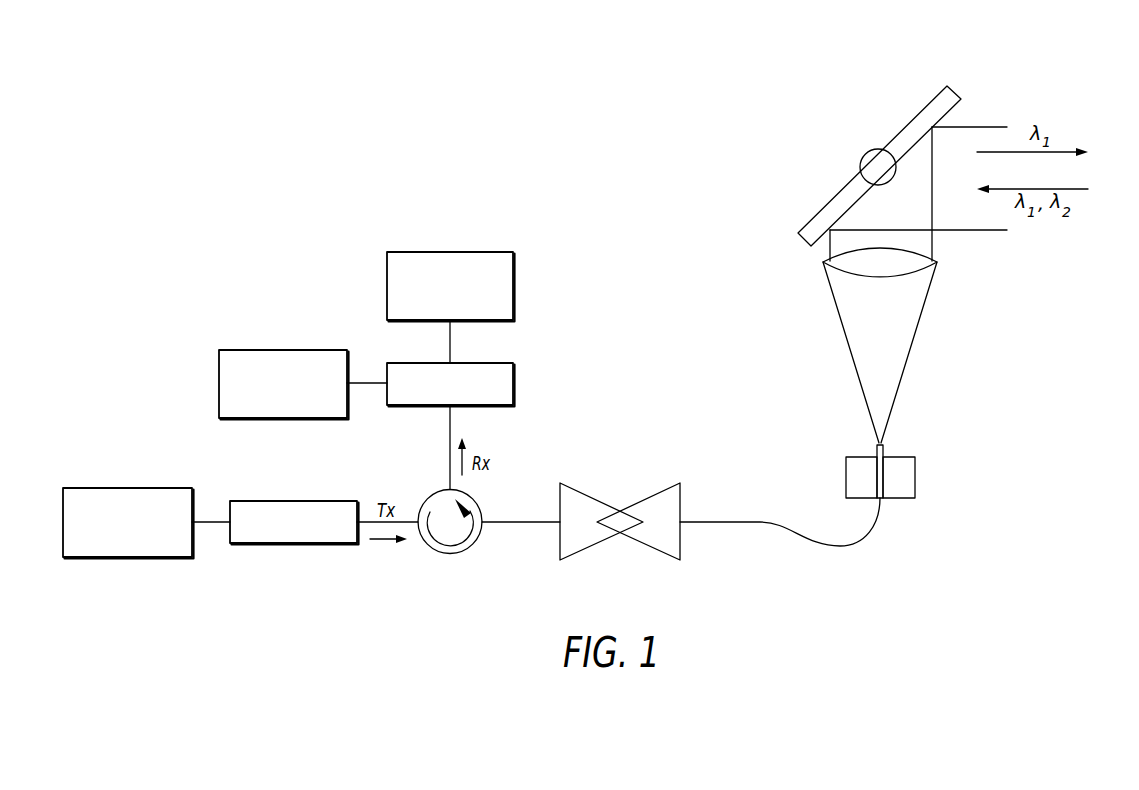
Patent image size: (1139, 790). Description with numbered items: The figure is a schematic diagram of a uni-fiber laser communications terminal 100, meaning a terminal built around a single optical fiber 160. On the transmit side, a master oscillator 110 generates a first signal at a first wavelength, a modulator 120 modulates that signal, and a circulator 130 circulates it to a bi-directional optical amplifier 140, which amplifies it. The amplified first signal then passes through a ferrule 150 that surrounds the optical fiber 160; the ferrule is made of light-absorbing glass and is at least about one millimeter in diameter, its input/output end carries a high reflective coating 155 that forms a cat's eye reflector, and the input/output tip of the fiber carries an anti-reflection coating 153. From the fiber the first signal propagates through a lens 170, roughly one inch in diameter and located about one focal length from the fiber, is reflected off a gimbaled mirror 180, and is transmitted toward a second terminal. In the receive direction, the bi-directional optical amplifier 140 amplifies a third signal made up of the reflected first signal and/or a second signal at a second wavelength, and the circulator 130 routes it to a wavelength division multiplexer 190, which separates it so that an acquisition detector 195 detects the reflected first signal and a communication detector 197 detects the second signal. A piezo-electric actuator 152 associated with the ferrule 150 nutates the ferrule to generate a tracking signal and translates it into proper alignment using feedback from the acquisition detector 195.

The uni-fiber lasercom terminal 100 is at (1000, 590).
The master oscillator 110 is at (120, 557).
The modulator 120 is at (267, 543).
The circulator 130 is at (474, 531).
The bi-directional optical amplifier 140 is at (620, 532).
The ferrule 150 is at (915, 470).
The piezo-electric actuator 152 is at (1042, 497).
The anti-reflection coating 153 is at (878, 435).
The high reflective coating 155 is at (866, 457).
The optical fiber 160 is at (880, 492).
The lens 170 is at (887, 277).
The gimbaled mirror 180 is at (927, 105).
The wavelength division multiplexer 190 is at (513, 392).
The acquisition detector 195 is at (450, 252).
The communication detector 197 is at (300, 350).